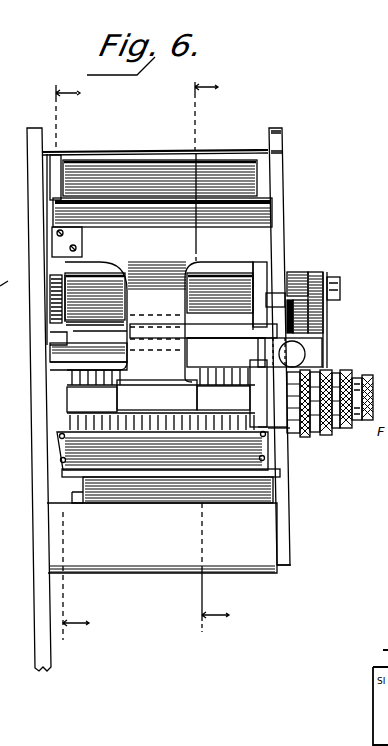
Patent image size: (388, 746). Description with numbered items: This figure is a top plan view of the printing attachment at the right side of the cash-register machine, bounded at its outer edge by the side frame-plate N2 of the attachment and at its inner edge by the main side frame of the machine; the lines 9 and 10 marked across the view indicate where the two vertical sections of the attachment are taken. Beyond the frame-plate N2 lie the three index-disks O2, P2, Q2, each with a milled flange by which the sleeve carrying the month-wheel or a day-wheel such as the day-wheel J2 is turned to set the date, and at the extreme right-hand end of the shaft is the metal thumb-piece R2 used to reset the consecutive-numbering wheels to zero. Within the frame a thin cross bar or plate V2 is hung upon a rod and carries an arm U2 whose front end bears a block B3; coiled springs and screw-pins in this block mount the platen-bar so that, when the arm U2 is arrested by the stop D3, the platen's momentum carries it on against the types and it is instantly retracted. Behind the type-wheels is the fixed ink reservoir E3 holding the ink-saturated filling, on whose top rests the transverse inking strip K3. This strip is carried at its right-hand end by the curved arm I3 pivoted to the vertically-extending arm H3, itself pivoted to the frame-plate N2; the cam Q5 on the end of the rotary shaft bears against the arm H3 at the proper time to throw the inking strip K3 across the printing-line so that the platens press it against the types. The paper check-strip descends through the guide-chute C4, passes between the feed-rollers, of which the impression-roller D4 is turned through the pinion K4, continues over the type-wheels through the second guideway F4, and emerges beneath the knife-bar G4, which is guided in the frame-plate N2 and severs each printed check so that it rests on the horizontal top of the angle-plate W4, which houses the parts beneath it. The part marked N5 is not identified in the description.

The section line 9 9 is at (208, 360).
The section line 10 10 is at (67, 366).
The guide-chute C4 is at (122, 160).
The side plate bracket N5 is at (44, 193).
The cross bar or plate V2 is at (162, 243).
The side frame-plate N2 is at (284, 236).
The thumb-piece R2 is at (7, 274).
The pinion K4 is at (56, 293).
The feed-roller (impression-roller) D4 is at (124, 316).
The arm U2 is at (172, 311).
The inking strip or pad K3 is at (163, 345).
The ink reservoir E3 is at (207, 340).
The stop D3 is at (88, 356).
The block B3 is at (157, 395).
The day-wheel J2 is at (223, 398).
The second guideway F4 is at (173, 452).
The knife-bar G4 is at (157, 474).
The angle-plate W4 is at (162, 538).
The cam Q5 is at (292, 294).
The vertically-extending arm H3 is at (315, 270).
The curved arm I3 is at (328, 323).
The index-disk O2 is at (308, 435).
The index-disk P2 is at (323, 433).
The index-disk Q2 is at (345, 430).